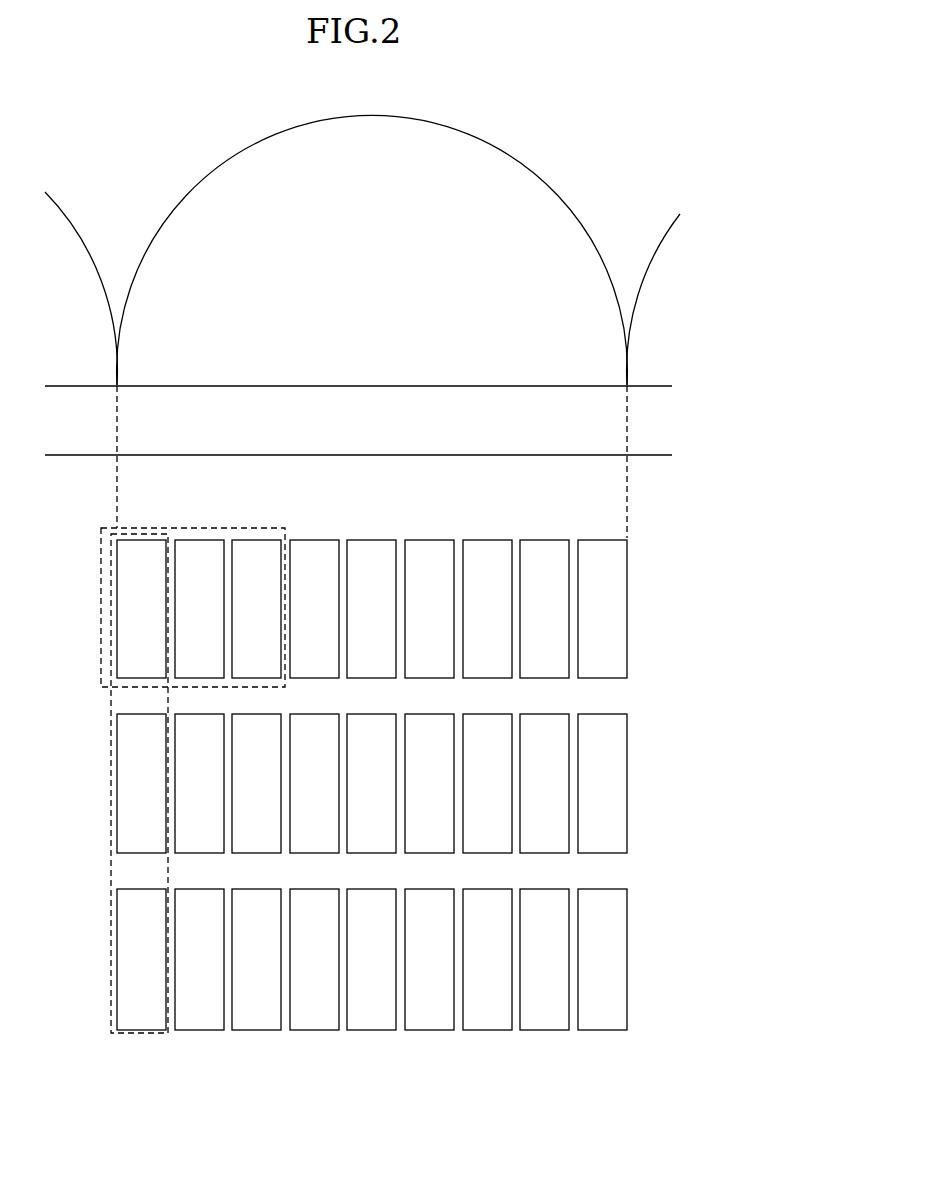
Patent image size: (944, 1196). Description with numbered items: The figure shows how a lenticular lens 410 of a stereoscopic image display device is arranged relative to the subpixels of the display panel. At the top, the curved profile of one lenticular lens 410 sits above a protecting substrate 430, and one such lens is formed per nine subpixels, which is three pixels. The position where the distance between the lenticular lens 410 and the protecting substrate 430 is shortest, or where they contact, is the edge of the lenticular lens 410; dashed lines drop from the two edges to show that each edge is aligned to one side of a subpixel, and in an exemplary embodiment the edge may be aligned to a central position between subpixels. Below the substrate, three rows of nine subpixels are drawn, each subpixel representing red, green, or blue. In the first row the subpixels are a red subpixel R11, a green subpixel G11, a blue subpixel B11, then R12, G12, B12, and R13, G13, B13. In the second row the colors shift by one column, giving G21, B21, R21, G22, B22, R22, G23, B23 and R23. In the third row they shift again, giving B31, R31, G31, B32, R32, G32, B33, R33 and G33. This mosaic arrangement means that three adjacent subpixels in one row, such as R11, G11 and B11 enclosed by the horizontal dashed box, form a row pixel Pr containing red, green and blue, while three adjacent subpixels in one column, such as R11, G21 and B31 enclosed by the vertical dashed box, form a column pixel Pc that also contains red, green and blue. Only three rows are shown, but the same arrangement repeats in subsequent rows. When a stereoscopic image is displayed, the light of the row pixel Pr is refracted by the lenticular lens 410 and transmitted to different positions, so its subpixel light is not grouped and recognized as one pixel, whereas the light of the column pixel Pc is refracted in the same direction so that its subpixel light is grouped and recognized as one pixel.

The lenticular lens 410 is at (523, 197).
The protecting substrate 430 is at (70, 441).
The row pixel Pr is at (101, 654).
The column pixel Pc is at (111, 866).
The red subpixel R11 is at (141, 609).
The green subpixel G11 is at (199, 609).
The blue subpixel B11 is at (256, 609).
The red subpixel R12 is at (314, 609).
The green subpixel G12 is at (371, 609).
The blue subpixel B12 is at (429, 609).
The red subpixel R13 is at (487, 609).
The green subpixel G13 is at (544, 609).
The blue subpixel B13 is at (602, 609).
The green subpixel G21 is at (141, 783).
The blue subpixel B21 is at (199, 783).
The red subpixel R21 is at (256, 783).
The green subpixel G22 is at (314, 783).
The blue subpixel B22 is at (371, 783).
The red subpixel R22 is at (429, 783).
The green subpixel G23 is at (487, 783).
The blue subpixel B23 is at (544, 783).
The red subpixel R23 is at (602, 783).
The blue subpixel B31 is at (141, 959).
The red subpixel R31 is at (199, 959).
The green subpixel G31 is at (256, 959).
The blue subpixel B32 is at (314, 959).
The red subpixel R32 is at (371, 959).
The green subpixel G32 is at (429, 959).
The blue subpixel B33 is at (487, 959).
The red subpixel R33 is at (544, 959).
The green subpixel G33 is at (602, 959).